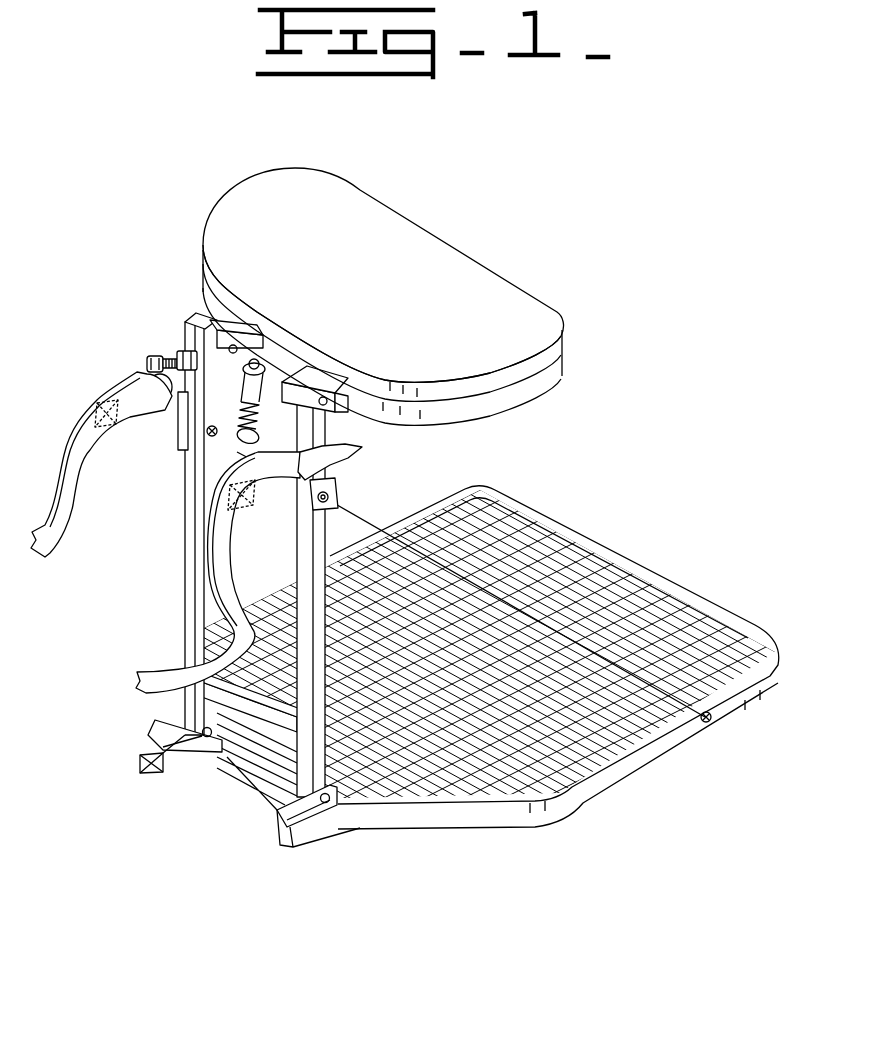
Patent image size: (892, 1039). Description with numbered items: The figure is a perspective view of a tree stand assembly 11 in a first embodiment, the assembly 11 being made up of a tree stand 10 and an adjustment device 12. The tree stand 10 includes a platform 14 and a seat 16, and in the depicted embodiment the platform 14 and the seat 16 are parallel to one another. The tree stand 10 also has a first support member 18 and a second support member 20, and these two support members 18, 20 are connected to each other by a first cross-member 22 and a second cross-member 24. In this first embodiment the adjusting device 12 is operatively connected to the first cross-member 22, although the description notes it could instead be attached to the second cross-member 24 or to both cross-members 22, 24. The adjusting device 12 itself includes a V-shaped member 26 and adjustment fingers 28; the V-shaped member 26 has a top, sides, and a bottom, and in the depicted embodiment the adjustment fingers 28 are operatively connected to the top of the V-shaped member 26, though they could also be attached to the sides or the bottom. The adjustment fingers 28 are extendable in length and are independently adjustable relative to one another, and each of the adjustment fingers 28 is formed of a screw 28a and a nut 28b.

The tree stand 10 is at (470, 232).
The tree stand assembly 11 is at (610, 496).
The adjustment device 12 is at (150, 346).
The platform 14 is at (650, 750).
The seat 16 is at (566, 340).
The first support member 18 is at (182, 618).
The second support member 20 is at (323, 532).
The first cross-member 22 is at (345, 415).
The second cross-member 24 is at (262, 717).
The V-shaped member 26 is at (181, 454).
The adjustment fingers 28 is at (228, 448).
The screw 28a is at (147, 362).
The nut 28b is at (183, 350).